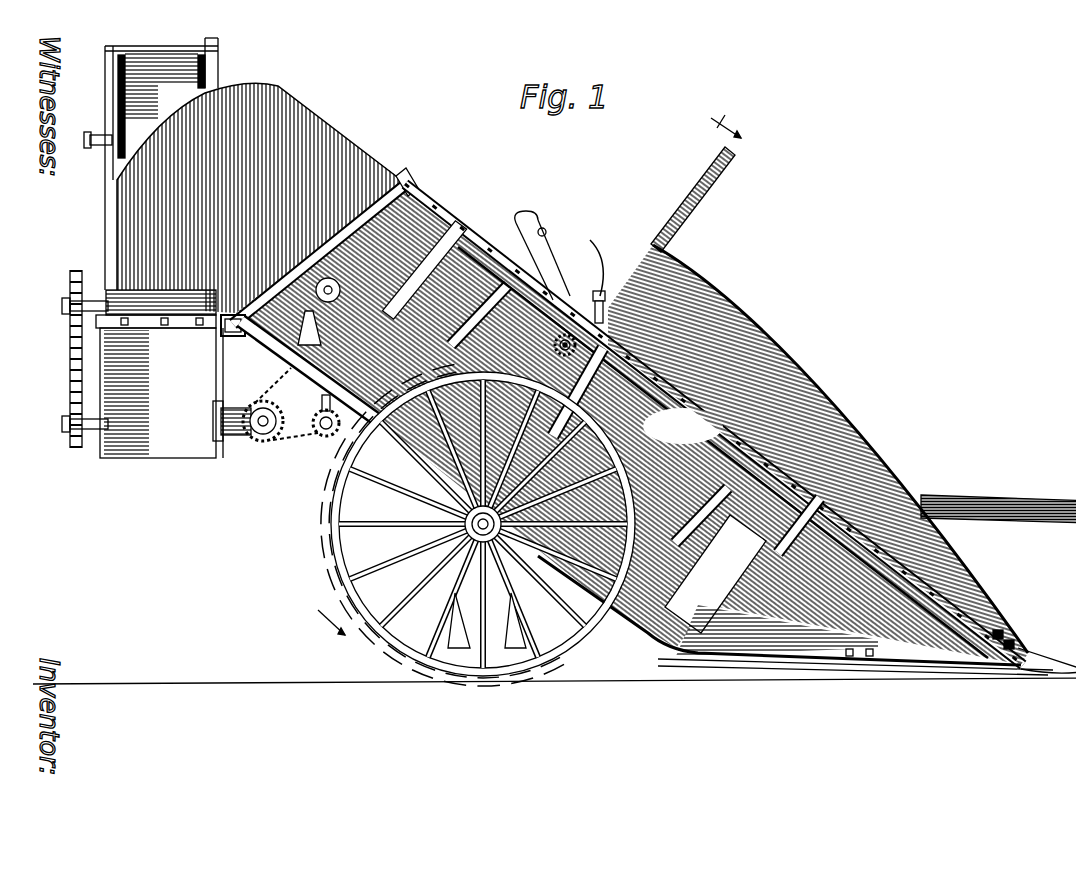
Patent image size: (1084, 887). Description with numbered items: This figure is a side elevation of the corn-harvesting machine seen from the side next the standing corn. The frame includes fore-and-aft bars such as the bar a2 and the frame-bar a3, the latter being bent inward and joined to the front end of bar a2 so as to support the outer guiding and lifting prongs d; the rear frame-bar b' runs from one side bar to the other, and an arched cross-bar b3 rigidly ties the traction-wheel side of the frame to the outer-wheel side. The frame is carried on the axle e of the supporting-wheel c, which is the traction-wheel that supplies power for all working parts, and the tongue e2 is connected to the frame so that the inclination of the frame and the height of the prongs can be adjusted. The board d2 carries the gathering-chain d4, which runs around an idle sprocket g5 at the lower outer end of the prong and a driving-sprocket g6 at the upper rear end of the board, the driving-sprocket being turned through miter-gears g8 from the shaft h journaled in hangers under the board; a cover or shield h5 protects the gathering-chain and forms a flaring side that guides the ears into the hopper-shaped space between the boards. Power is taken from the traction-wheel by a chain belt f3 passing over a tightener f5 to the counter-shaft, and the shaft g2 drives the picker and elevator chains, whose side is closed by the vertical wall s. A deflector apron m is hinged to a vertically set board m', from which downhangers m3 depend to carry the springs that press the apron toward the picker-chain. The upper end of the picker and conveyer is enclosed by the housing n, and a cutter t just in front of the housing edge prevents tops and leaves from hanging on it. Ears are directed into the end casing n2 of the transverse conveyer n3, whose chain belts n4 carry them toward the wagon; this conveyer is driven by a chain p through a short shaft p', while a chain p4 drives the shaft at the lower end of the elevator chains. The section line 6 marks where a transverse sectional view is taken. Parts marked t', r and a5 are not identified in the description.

The housing n is at (335, 150).
The end casing n2 is at (159, 374).
The transverse conveyer n3 is at (662, 220).
The chain belts n4 is at (205, 75).
The cutter t is at (406, 167).
The bracket t' is at (328, 323).
The rail r is at (417, 195).
The apron m is at (574, 409).
The board m' is at (683, 427).
The downhangers m3 is at (535, 210).
The section line 6 is at (529, 373).
The shaft g2 is at (318, 270).
The idle sprockets g5 is at (1000, 625).
The driving-sprockets g6 is at (586, 290).
The miter-gears g8 is at (546, 337).
The frame bar a5 is at (322, 364).
The frame-bar a3 is at (638, 615).
The fore-and-aft bar a2 is at (925, 662).
The vertical wall s is at (628, 424).
The shaft h is at (630, 371).
The cover or shield h5 is at (847, 412).
The axle e is at (483, 524).
The tongue e2 is at (998, 493).
The traction-wheel c is at (452, 606).
The rear frame-bar b' is at (238, 344).
The arched cross-bar b3 is at (530, 393).
The chain p is at (231, 413).
The short shaft p' is at (231, 443).
The chain p4 is at (62, 355).
The chain belt f3 is at (332, 484).
The tightener f5 is at (308, 422).
The outer guiding and lifting prongs d is at (1050, 648).
The board d2 is at (910, 557).
The gathering-chain d4 is at (790, 486).